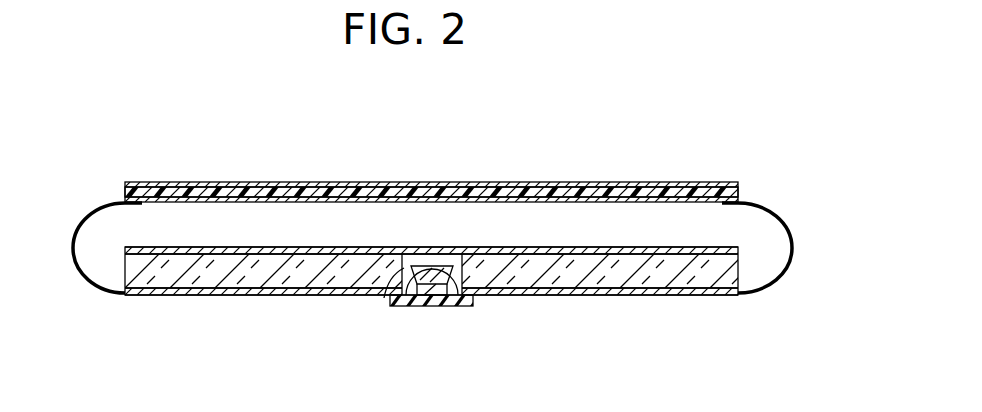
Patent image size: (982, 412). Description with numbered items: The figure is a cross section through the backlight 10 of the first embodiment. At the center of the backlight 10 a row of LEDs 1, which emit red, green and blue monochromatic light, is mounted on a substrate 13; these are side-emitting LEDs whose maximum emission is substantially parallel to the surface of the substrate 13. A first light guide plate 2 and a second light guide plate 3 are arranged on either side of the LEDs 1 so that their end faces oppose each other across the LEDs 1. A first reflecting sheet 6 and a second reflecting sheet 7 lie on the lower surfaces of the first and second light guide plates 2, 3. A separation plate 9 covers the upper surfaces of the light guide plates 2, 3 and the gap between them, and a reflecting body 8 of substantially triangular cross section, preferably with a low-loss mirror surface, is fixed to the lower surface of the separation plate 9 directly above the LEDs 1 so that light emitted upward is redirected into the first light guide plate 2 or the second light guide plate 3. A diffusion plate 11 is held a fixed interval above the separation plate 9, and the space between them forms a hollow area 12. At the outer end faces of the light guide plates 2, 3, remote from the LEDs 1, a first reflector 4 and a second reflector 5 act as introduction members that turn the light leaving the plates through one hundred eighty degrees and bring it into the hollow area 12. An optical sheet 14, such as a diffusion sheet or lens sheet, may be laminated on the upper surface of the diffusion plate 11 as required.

The LED 1 is at (433, 300).
The first light guide plate 2 is at (270, 273).
The second light guide plate 3 is at (608, 273).
The first reflector 4 is at (85, 280).
The second reflector 5 is at (783, 280).
The first reflecting sheet 6 is at (198, 292).
The second reflecting sheet 7 is at (545, 294).
The reflecting body 8 is at (385, 300).
The separation plate 9 is at (490, 250).
The backlight 10 is at (777, 172).
The diffusion plate 11 is at (603, 193).
The hollow area 12 is at (177, 214).
The substrate 13 is at (457, 305).
The optical sheet 14 is at (255, 192).